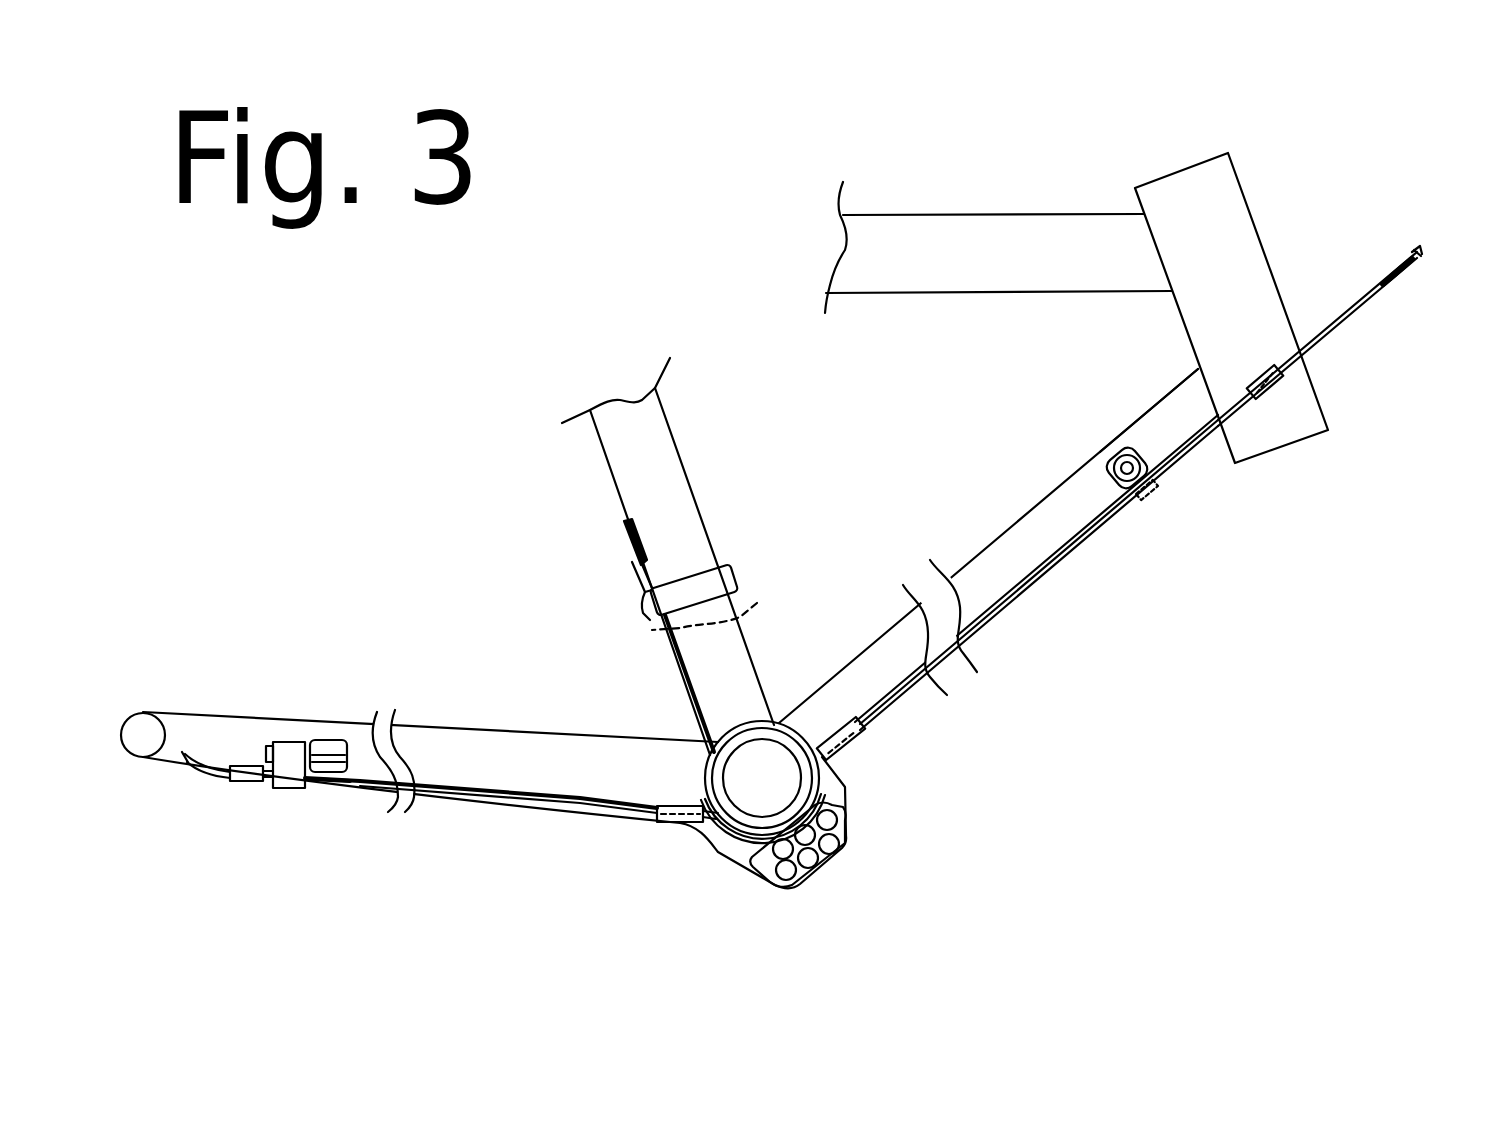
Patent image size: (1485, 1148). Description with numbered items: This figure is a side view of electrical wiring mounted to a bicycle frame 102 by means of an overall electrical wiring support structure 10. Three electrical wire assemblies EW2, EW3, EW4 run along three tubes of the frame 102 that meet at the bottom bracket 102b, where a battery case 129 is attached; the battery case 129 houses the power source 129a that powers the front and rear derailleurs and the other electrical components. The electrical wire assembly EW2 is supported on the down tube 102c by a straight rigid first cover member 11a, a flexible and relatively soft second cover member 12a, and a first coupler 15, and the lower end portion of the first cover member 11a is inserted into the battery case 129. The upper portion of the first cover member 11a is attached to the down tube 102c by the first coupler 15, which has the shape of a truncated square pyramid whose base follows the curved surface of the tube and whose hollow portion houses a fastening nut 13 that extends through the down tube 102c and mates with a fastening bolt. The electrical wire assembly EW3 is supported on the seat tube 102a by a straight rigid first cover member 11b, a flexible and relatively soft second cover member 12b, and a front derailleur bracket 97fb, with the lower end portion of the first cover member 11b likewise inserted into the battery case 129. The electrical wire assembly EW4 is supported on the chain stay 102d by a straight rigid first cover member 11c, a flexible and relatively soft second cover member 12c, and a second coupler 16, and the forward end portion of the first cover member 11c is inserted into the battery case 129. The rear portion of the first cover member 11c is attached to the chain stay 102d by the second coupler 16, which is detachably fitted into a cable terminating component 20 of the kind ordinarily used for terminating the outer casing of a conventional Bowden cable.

The electrical wiring support structure 10 is at (1172, 522).
The frame 102 is at (690, 430).
The seat tube 102a is at (682, 488).
The bottom bracket 102b is at (768, 727).
The down tube 102c is at (997, 563).
The chain stay 102d is at (500, 732).
The first cover member 11a is at (1213, 427).
The first cover member 11b is at (680, 683).
The first cover member 11c is at (572, 812).
The second cover member 12a is at (1343, 313).
The second cover member 12b is at (638, 573).
The second cover member 12c is at (245, 782).
The fastening nut 13 is at (1103, 450).
The first coupler 15 is at (1125, 450).
The second coupler 16 is at (293, 745).
The cable terminating component 20 is at (320, 743).
The front derailleur bracket 97fb is at (740, 573).
The battery case 129 is at (840, 792).
The power source 129a is at (847, 836).
The electrical wire assembly EW2 is at (1393, 280).
The electrical wire assembly EW3 is at (735, 599).
The electrical wire assembly EW4 is at (328, 793).